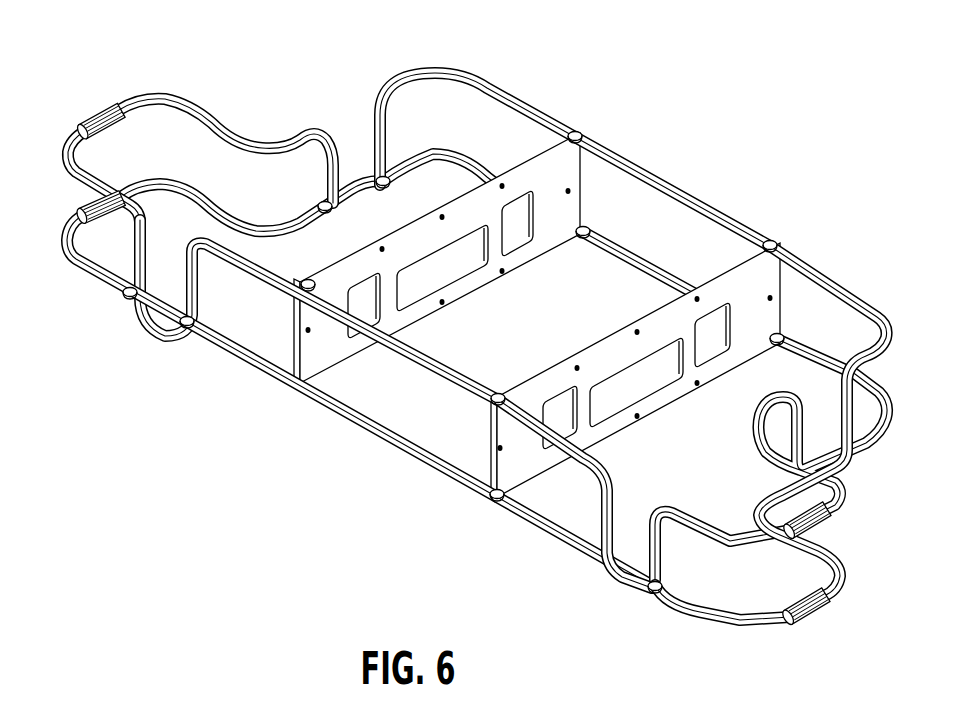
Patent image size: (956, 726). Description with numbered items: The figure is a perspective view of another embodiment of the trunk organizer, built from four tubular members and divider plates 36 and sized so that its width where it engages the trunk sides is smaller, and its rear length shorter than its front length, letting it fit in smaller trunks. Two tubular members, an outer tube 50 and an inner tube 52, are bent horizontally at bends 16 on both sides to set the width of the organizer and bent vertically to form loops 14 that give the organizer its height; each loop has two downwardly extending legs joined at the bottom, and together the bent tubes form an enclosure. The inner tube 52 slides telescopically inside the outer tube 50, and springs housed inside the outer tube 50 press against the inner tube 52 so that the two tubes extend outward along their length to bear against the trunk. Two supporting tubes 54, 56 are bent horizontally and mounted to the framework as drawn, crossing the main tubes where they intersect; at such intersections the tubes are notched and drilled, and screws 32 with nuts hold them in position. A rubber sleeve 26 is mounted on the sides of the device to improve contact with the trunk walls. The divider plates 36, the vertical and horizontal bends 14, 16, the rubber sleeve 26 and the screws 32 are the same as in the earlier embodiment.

The vertical bends (loops) 14 is at (160, 338).
The horizontal bends 16 is at (267, 141).
The rubber sleeve 26 is at (96, 118).
The screws 32 is at (124, 298).
The divider plates 36 is at (605, 340).
The outer tube 50 is at (514, 100).
The inner tube 52 is at (836, 291).
The supporting tube 54 is at (233, 352).
The supporting tube 56 is at (567, 538).